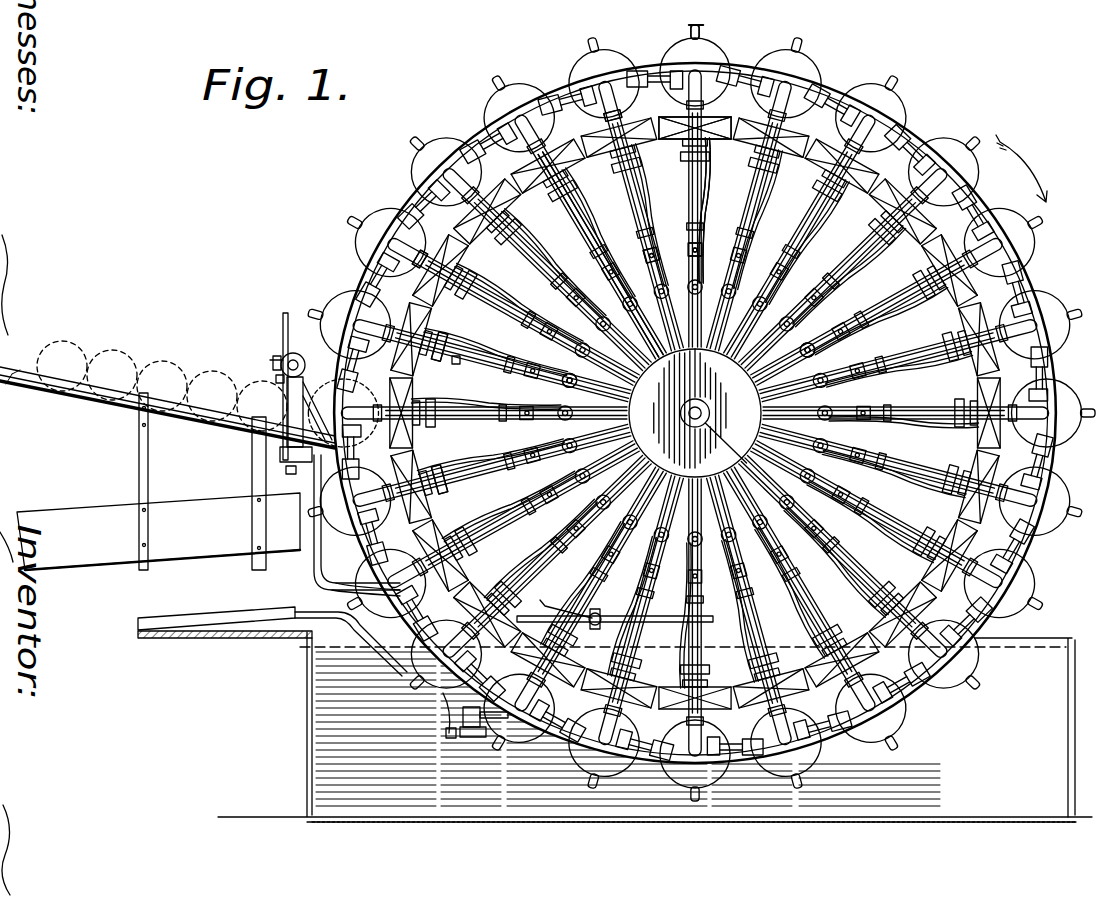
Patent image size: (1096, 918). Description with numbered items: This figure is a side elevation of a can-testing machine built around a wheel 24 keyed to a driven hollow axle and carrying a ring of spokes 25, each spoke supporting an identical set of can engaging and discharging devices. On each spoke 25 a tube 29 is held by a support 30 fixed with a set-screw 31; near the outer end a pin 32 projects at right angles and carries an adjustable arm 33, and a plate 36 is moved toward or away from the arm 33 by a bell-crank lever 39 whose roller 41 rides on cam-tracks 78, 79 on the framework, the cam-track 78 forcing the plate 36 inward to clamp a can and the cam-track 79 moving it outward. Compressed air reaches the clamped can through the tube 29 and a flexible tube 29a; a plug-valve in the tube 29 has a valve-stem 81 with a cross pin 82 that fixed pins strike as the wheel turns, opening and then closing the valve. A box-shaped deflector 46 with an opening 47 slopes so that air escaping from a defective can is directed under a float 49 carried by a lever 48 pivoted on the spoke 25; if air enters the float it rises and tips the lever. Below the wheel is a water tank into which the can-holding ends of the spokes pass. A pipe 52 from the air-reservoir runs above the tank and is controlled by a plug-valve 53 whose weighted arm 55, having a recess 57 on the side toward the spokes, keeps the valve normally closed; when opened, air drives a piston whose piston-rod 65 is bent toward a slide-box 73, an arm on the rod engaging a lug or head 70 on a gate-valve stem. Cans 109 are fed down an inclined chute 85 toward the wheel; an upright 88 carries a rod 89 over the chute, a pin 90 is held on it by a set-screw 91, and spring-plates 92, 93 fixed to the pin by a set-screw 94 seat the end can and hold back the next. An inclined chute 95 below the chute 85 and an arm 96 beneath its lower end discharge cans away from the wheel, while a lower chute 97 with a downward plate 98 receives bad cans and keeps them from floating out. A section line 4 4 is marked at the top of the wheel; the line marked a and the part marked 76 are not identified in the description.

The section line 4- 4 is at (694, 40).
The wheel 24 is at (712, 395).
The spokes 25 is at (584, 238).
The tube 29 is at (672, 396).
The flexible tube 29a is at (703, 196).
The support 30 is at (596, 112).
The set-screw 31 is at (702, 247).
The pin 32 is at (808, 343).
The arm 33 is at (796, 46).
The plate 36 is at (498, 110).
The bell-crank lever 39 is at (408, 264).
The roller 41 is at (562, 92).
The deflector 46 is at (668, 144).
The opening 47 is at (464, 468).
The lever 48 is at (484, 360).
The float 49 is at (455, 364).
The pipe 52 is at (652, 616).
The plug-valve 53 is at (600, 612).
The arm 55 is at (568, 612).
The recess 57 is at (655, 727).
The piston-rod 65 is at (442, 708).
The lug or head 70 is at (472, 738).
The slide-box 73 is at (504, 740).
The bracket 76 is at (450, 738).
The cam-track 78 is at (322, 518).
The cam-track 79 is at (396, 600).
The valve-stem 81 is at (650, 260).
The pin 82 is at (566, 383).
The inclined track or chute 85 is at (167, 407).
The upright 88 is at (286, 398).
The rod 89 is at (290, 330).
The pin 90 is at (276, 356).
The set-screw 91 is at (268, 360).
The spring-plate 92 is at (308, 380).
The spring-plate 93 is at (297, 356).
The set-screw 94 is at (276, 379).
The inclined chute 95 is at (150, 481).
The arm 96 is at (292, 474).
The chute 97 is at (212, 616).
The plate 98 is at (334, 640).
The cans 109 is at (106, 362).
The section line a is at (681, 648).